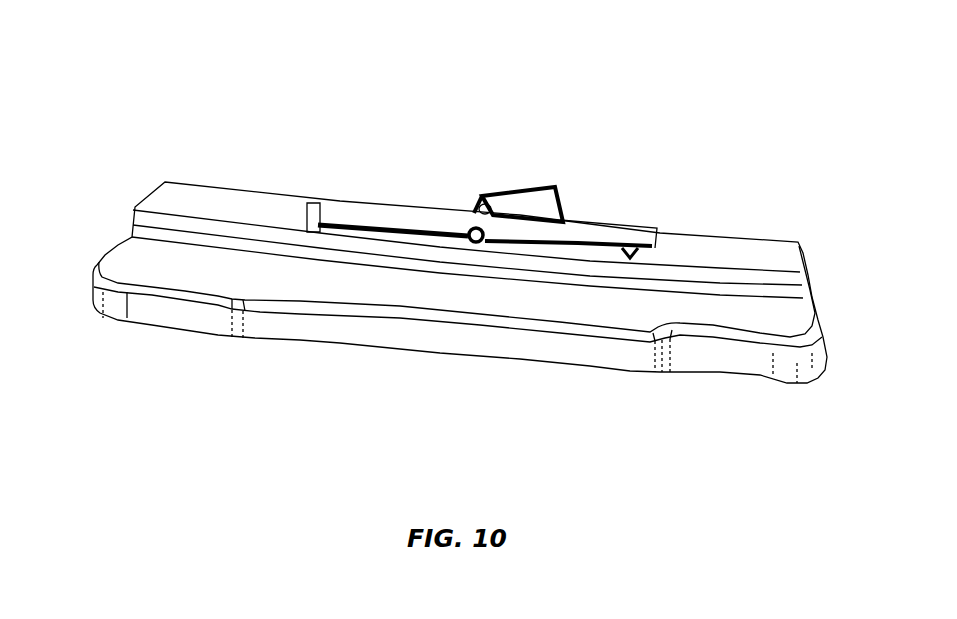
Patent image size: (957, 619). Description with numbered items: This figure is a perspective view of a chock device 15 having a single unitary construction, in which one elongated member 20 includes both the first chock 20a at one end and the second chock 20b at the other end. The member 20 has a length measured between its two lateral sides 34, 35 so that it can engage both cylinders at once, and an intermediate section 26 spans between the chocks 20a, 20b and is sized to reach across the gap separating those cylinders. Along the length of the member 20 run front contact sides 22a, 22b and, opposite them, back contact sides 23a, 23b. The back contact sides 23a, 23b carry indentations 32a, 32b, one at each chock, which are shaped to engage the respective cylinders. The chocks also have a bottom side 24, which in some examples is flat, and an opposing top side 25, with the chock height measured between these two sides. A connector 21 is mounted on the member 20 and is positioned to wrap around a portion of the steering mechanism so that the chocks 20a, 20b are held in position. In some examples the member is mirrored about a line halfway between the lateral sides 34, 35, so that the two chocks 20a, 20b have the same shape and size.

The device 15 is at (461, 228).
The member 20 is at (282, 200).
The first chock 20a is at (182, 197).
The second chock 20b is at (760, 253).
The connector 21 is at (595, 228).
The front contact side 22a is at (212, 190).
The front contact side 22b is at (698, 233).
The back contact side 23a is at (227, 312).
The back contact side 23b is at (688, 362).
The bottom side 24 is at (512, 362).
The top side 25 is at (165, 200).
The intermediate section 26 is at (365, 290).
The indentation 32a is at (183, 305).
The indentation 32b is at (737, 353).
The lateral side 34 is at (120, 247).
The lateral side 35 is at (808, 278).